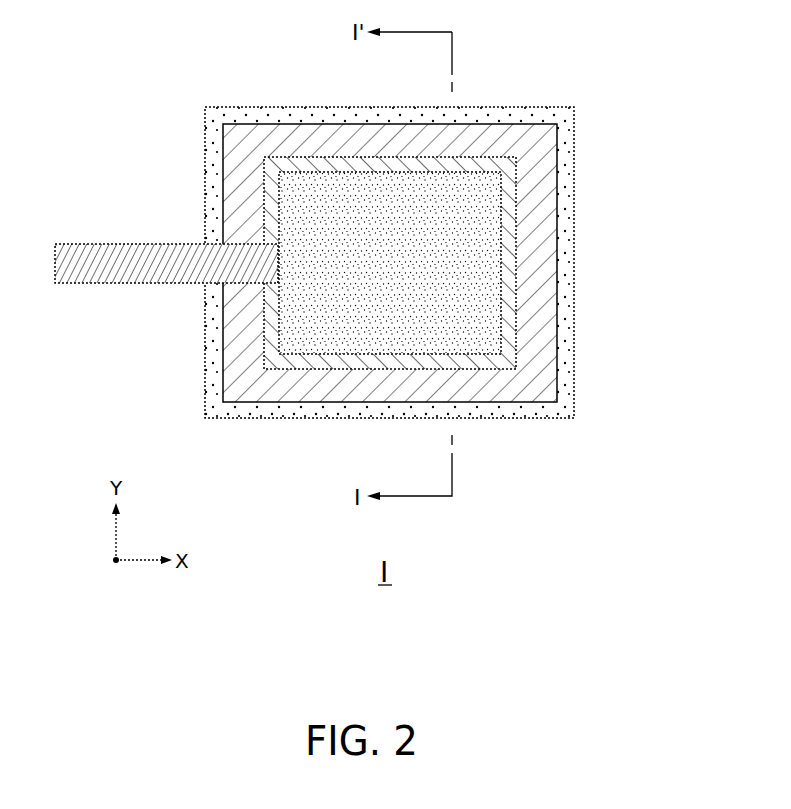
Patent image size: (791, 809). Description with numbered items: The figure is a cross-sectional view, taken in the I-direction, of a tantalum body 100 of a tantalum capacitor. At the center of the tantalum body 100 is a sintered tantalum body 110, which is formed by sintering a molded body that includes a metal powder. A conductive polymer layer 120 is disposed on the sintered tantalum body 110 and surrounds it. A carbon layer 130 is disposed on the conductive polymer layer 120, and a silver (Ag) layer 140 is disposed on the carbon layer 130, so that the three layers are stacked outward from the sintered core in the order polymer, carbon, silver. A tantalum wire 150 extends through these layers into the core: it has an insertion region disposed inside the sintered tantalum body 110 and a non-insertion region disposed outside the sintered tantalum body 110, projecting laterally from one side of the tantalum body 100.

The tantalum body 100 is at (360, 260).
The sintered tantalum body 110 is at (324, 322).
The conductive polymer layer 120 is at (333, 164).
The carbon layer 130 is at (271, 138).
The silver (Ag) layer 140 is at (226, 114).
The tantalum wire 150 is at (92, 250).